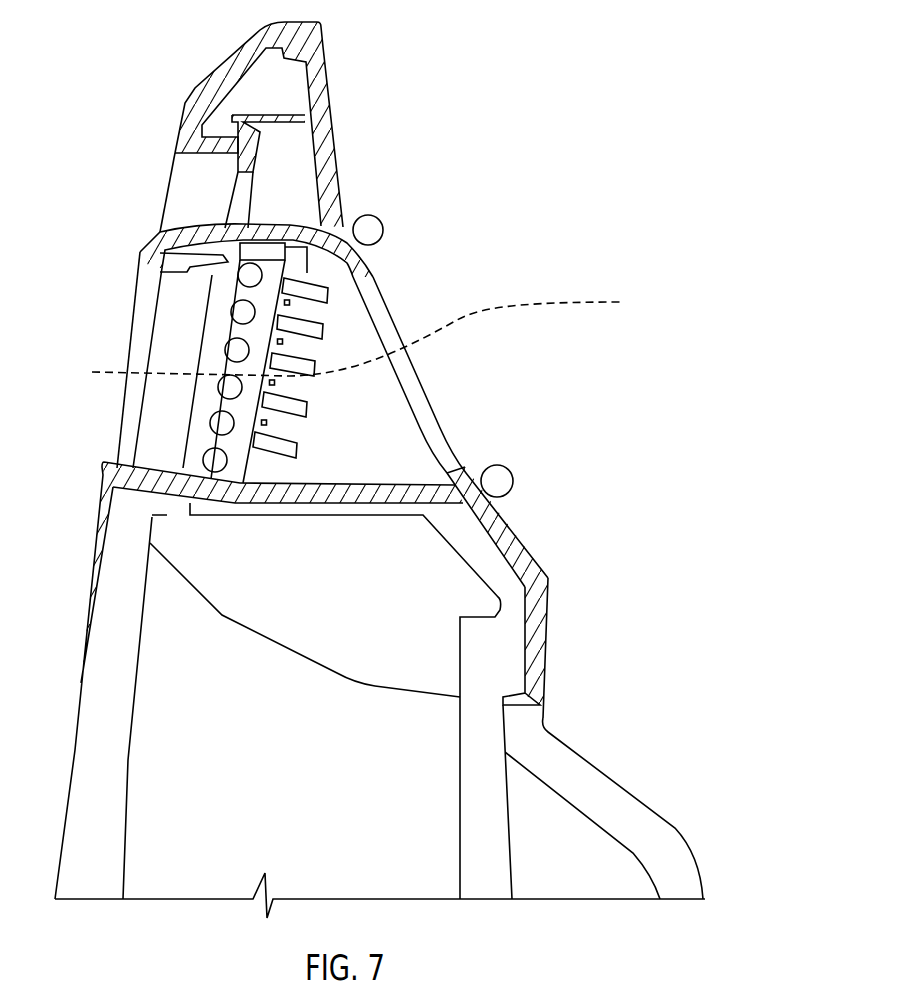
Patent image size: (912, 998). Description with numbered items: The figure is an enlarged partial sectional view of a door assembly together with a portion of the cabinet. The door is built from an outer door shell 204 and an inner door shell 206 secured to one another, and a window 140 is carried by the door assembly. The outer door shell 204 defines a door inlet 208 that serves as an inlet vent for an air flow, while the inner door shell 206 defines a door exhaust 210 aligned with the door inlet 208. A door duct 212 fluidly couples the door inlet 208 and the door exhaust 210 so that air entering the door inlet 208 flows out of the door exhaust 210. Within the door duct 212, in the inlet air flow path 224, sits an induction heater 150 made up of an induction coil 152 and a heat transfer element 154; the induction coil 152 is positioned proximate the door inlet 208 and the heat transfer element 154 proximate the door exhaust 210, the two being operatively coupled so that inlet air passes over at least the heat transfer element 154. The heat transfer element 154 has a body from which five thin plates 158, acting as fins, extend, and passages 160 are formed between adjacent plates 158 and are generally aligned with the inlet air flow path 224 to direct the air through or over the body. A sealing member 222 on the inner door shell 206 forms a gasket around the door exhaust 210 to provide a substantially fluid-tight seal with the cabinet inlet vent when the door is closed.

The window 140 is at (623, 807).
The induction heater 150 is at (268, 226).
The induction coil 152 is at (217, 467).
The heat transfer element 154 is at (333, 286).
The plates 158 is at (314, 372).
The passages 160 is at (285, 433).
The outer door shell 204 is at (220, 78).
The inner door shell 206 is at (547, 602).
The door inlet 208 is at (130, 318).
The door exhaust 210 is at (428, 414).
The door duct 212 is at (181, 393).
The sealing member 222 is at (378, 218).
The inlet air flow path 224 is at (596, 301).